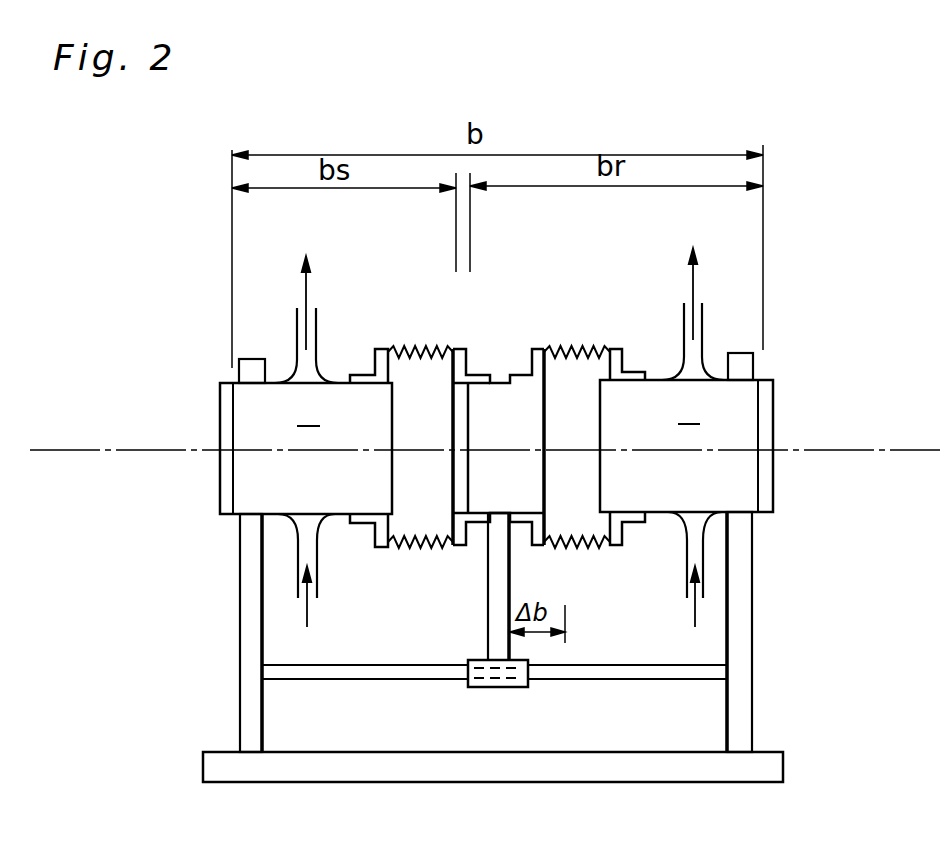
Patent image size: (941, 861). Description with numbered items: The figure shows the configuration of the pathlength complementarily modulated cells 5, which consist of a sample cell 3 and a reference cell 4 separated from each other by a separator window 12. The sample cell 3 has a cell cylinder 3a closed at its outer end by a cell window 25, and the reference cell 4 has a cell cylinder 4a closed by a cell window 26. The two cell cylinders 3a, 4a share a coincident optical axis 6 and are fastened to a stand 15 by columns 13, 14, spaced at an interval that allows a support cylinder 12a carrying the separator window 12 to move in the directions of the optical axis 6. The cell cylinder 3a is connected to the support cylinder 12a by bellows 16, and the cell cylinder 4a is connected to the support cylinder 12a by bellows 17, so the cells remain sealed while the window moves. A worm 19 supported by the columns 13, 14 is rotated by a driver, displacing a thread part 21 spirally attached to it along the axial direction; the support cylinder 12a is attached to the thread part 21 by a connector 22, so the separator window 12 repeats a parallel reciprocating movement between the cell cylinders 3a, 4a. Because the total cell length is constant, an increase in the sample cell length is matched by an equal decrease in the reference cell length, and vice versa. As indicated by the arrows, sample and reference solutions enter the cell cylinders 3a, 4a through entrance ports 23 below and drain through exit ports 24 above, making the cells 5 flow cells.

The sample cell 3 is at (306, 448).
The reference cell 4 is at (686, 446).
The cell cylinder 3a is at (338, 500).
The cell cylinder 4a is at (658, 500).
The pathlength complementarily modulated cells 5 is at (120, 556).
The optical axis 6 is at (883, 445).
The separator window 12 is at (456, 408).
The support cylinder 12a is at (525, 503).
The column 13 is at (248, 702).
The column 14 is at (745, 711).
The stand 15 is at (678, 772).
The bellows 16 is at (427, 347).
The bellows 17 is at (583, 347).
The worm 19 is at (385, 672).
The thread part 21 is at (498, 688).
The connector 22 is at (495, 566).
The entrance ports 23 is at (297, 568).
The exit ports 24 is at (318, 325).
The cell window 25 is at (228, 481).
The cell window 26 is at (775, 485).